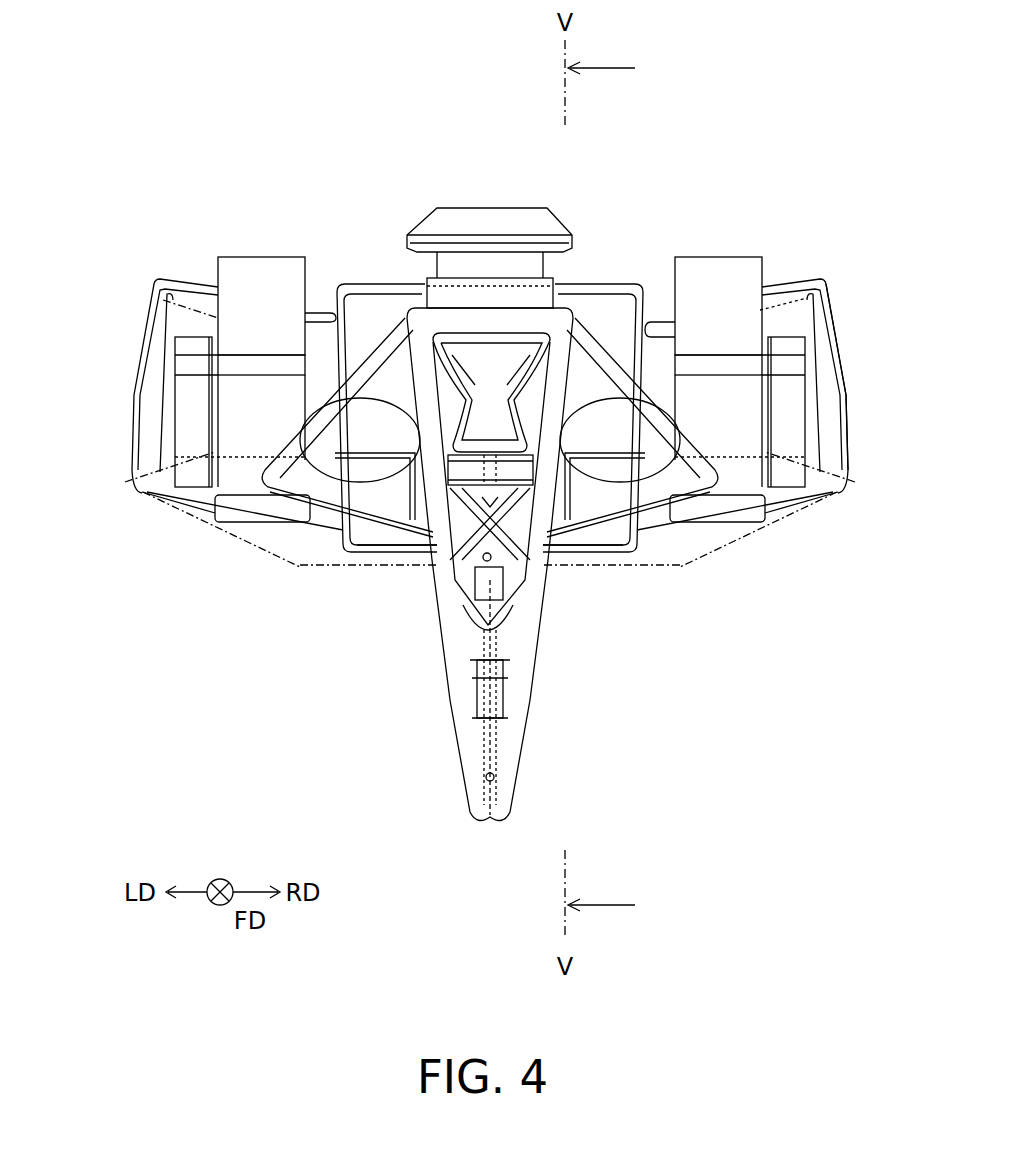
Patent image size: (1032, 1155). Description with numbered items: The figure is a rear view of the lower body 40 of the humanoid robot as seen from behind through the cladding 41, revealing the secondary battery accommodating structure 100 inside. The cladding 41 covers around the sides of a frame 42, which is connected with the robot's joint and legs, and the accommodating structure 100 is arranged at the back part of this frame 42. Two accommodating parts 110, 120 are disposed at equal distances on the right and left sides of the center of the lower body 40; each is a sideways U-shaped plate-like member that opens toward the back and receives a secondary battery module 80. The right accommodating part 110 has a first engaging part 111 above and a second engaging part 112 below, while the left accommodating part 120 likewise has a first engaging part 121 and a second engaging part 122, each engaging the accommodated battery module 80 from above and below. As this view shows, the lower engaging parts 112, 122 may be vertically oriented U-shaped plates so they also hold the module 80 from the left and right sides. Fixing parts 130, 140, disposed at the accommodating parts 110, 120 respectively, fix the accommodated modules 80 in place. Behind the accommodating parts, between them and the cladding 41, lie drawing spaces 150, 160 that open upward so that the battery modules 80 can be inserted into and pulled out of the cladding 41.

The lower body 40 is at (830, 200).
The cladding 41 is at (840, 323).
The frame 42 is at (188, 492).
The secondary battery module 80 is at (388, 532).
The secondary battery accommodating structure 100 is at (372, 657).
The accommodating part 110 is at (590, 305).
The first engaging part 111 is at (612, 292).
The second engaging part 112 is at (607, 530).
The accommodating part 120 is at (385, 305).
The first engaging part 121 is at (372, 312).
The second engaging part 122 is at (365, 552).
The fixing part 130 is at (663, 405).
The fixing part 140 is at (260, 404).
The drawing space 150 is at (662, 300).
The drawing space 160 is at (320, 305).